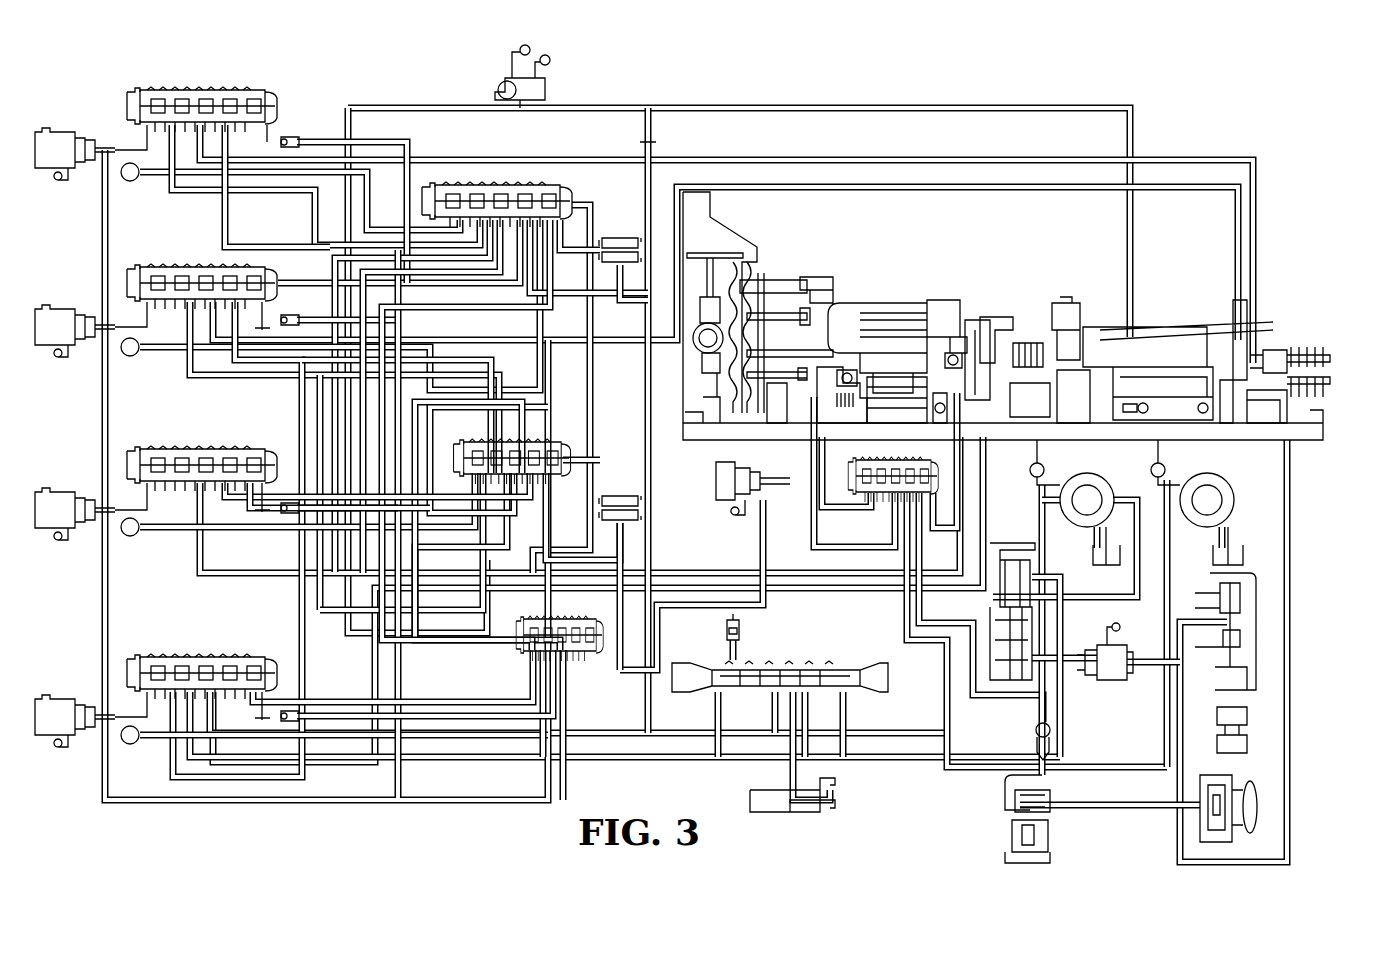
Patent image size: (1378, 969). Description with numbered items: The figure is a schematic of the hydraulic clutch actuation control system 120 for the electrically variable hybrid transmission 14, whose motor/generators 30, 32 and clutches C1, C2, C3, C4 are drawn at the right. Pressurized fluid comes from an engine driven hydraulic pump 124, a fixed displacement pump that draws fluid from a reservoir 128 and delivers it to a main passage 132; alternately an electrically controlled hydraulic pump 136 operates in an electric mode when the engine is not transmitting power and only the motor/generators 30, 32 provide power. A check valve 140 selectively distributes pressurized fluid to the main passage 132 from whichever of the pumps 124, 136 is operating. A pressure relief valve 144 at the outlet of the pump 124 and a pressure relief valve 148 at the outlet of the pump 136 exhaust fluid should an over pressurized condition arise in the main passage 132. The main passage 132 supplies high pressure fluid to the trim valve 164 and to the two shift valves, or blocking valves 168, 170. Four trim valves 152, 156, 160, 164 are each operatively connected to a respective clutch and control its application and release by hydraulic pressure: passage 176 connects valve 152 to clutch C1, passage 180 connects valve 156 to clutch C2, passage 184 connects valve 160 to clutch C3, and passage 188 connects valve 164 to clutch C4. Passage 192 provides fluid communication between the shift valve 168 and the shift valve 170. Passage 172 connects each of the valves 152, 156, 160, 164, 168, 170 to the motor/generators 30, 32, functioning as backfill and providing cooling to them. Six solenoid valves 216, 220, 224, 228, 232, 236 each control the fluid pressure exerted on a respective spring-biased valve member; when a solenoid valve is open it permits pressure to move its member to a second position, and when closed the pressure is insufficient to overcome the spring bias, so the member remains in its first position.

The electrically variable hybrid transmission 14 is at (1019, 336).
The motor/generator 30 is at (905, 303).
The motor/generator 32 is at (1105, 328).
The hydraulic clutch actuation control system 120 is at (323, 108).
The engine driven hydraulic pump 124 is at (1108, 486).
The reservoir 128 is at (1093, 565).
The main passage 132 is at (924, 730).
The electrically controlled hydraulic pump 136 is at (1230, 490).
The check valve 140 is at (1033, 730).
The pressure relief valve 144 is at (1032, 460).
The pressure relief valve 148 is at (1177, 462).
The trim valve 152 is at (148, 85).
The trim valve 156 is at (148, 263).
The trim valve 160 is at (148, 443).
The trim valve 164 is at (148, 651).
The shift valve 168 is at (570, 181).
The shift valve 170 is at (560, 440).
The passage 172 is at (765, 100).
The passage 176 is at (1204, 157).
The passage 180 is at (330, 335).
The passage 184 is at (200, 574).
The passage 188 is at (833, 594).
The passage 192 is at (560, 355).
The solenoid valve 216 is at (83, 134).
The solenoid valve 220 is at (83, 312).
The solenoid valve 224 is at (83, 492).
The solenoid valve 228 is at (83, 702).
The solenoid valve 232 is at (620, 238).
The solenoid valve 236 is at (638, 490).
The torque transmitting mechanism C1 is at (1277, 328).
The torque transmitting mechanism C2 is at (1286, 409).
The torque transmitting mechanism C3 is at (963, 330).
The torque transmitting mechanism C4 is at (993, 347).